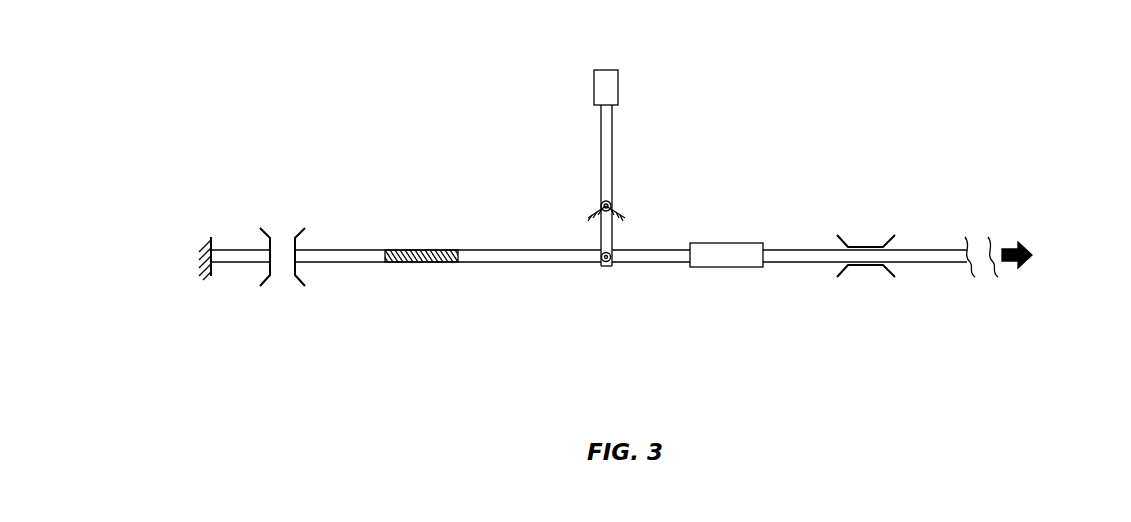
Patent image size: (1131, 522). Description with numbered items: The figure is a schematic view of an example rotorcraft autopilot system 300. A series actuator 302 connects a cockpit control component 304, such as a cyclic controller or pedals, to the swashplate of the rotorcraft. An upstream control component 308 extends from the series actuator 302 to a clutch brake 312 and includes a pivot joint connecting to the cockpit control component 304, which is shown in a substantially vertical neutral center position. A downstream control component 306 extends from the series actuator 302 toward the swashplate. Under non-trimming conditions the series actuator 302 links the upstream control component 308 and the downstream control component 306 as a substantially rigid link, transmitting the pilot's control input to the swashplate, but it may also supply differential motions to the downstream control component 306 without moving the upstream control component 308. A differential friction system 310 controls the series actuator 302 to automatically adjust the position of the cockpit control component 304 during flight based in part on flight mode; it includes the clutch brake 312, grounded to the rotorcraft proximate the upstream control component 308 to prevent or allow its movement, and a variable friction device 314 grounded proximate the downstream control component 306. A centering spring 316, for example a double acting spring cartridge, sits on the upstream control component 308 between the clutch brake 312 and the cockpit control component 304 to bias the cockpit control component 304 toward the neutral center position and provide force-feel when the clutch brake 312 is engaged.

The rotorcraft autopilot system 300 is at (178, 123).
The series actuator 302 is at (732, 243).
The cockpit control component 304 is at (613, 152).
The downstream control component 306 is at (813, 248).
The upstream control component 308 is at (542, 248).
The differential friction system 310 is at (798, 301).
The clutch brake 312 is at (298, 284).
The variable friction device 314 is at (870, 266).
The centering spring 316 is at (425, 250).